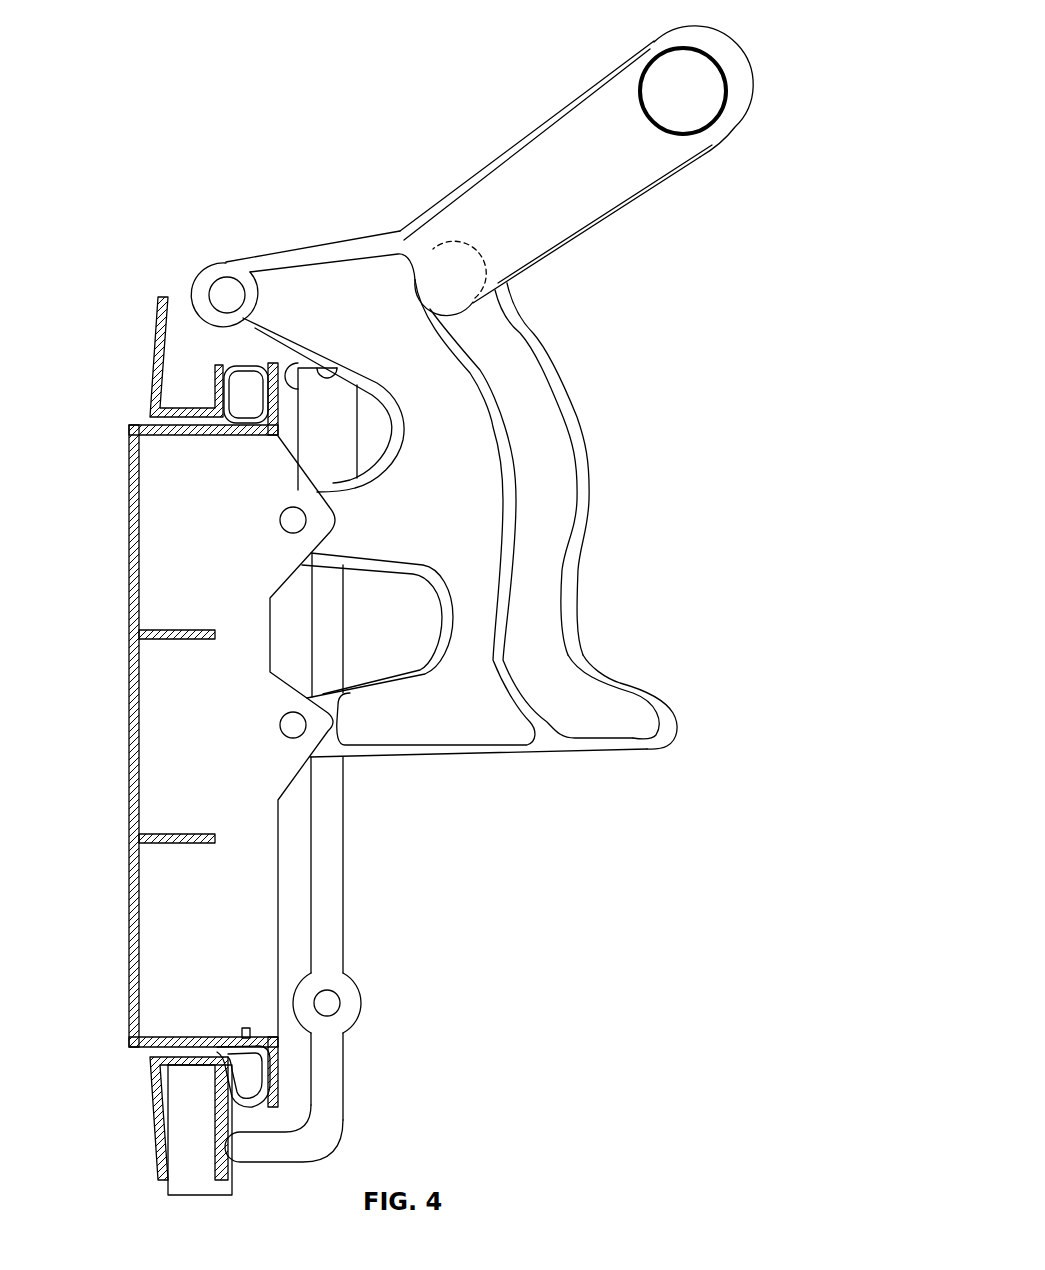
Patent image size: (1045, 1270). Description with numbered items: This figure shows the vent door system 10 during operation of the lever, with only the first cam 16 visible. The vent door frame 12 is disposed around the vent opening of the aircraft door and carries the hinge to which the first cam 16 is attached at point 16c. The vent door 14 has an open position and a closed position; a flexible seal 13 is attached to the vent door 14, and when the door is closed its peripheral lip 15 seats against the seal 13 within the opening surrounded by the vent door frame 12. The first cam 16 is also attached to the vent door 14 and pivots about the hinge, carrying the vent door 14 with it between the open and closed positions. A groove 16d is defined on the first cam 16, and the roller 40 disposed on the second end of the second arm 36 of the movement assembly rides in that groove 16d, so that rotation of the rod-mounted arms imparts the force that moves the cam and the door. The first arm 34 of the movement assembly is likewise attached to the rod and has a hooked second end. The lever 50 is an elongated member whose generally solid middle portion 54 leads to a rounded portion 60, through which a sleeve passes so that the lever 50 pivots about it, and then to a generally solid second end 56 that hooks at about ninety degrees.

The vent door system 10 is at (620, 153).
The vent door frame 12 is at (150, 357).
The flexible seal 13 is at (243, 1106).
The vent door 14 is at (120, 730).
The peripheral lip 15 is at (281, 1087).
The first cam 16 is at (598, 484).
The hinge attachment point 16c is at (222, 267).
The groove 16d is at (562, 613).
The first arm 34 is at (581, 246).
The second arm 36 is at (477, 198).
The roller 40 is at (483, 253).
The lever 50 is at (352, 863).
The middle portion 54 is at (347, 603).
The second end 56 is at (335, 1142).
The rounded portion 60 is at (363, 1003).